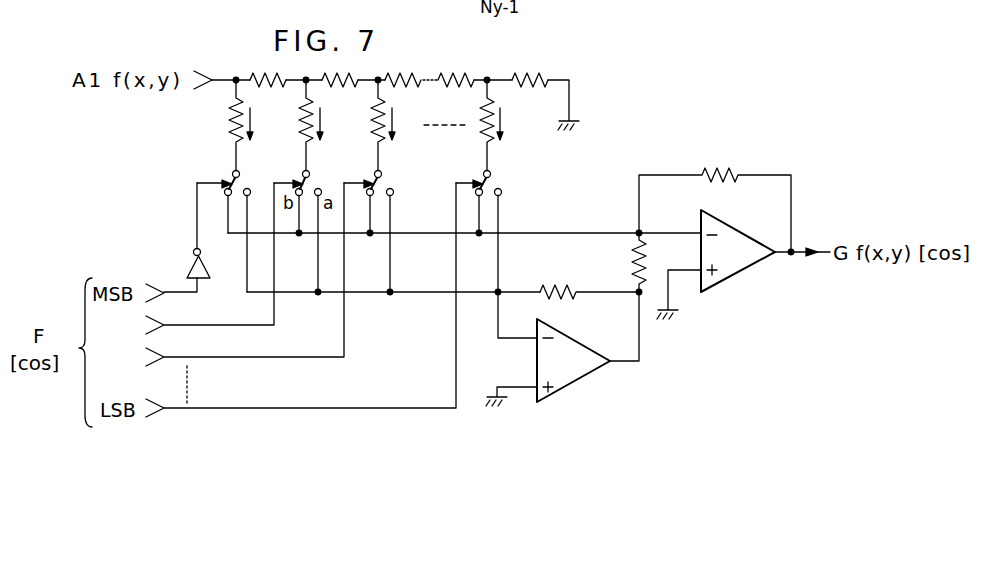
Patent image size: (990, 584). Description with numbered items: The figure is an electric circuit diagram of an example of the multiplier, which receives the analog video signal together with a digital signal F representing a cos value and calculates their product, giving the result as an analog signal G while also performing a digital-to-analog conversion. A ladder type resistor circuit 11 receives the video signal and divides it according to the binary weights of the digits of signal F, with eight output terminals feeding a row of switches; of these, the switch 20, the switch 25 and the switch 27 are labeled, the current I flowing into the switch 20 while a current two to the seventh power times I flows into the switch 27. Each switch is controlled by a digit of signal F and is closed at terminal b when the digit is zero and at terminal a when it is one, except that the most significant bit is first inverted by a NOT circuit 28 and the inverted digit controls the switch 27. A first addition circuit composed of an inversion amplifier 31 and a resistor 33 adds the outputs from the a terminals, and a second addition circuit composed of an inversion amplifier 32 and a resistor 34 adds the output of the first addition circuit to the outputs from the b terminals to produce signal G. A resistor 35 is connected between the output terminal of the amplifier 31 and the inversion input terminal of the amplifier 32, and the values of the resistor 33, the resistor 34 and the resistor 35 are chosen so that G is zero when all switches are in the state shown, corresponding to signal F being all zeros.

The ladder type resistor circuit 11 is at (548, 71).
The switch 20 is at (487, 191).
The switch 25 is at (378, 186).
The switch 27 is at (233, 177).
The NOT circuit 28 is at (193, 266).
The inversion amplifier 31 is at (580, 382).
The inversion amplifier 32 is at (743, 272).
The resistor 33 is at (558, 287).
The resistor 34 is at (737, 171).
The resistor 35 is at (632, 262).